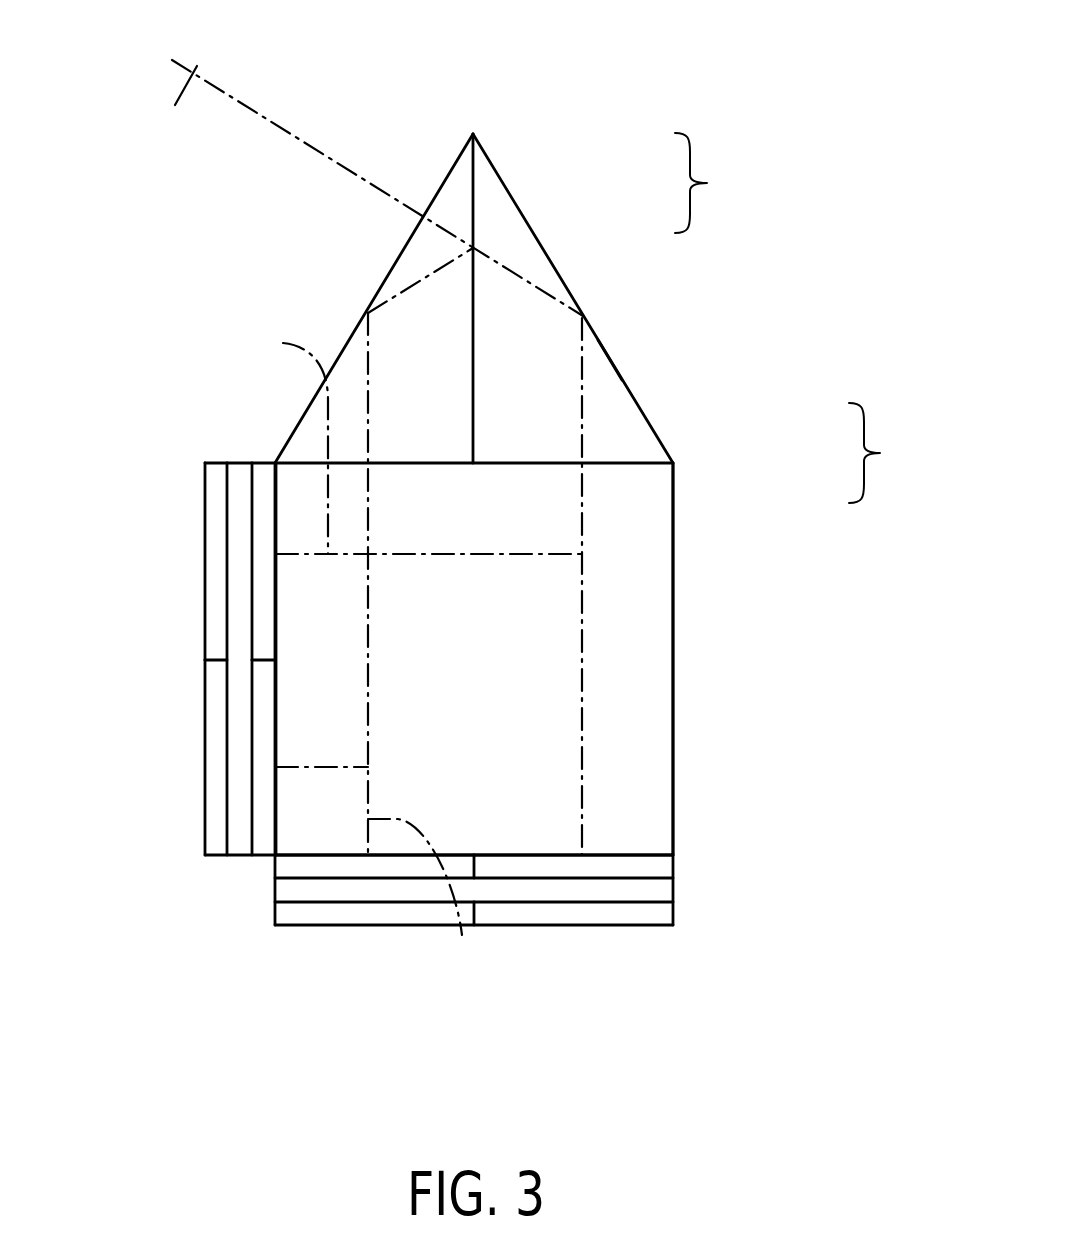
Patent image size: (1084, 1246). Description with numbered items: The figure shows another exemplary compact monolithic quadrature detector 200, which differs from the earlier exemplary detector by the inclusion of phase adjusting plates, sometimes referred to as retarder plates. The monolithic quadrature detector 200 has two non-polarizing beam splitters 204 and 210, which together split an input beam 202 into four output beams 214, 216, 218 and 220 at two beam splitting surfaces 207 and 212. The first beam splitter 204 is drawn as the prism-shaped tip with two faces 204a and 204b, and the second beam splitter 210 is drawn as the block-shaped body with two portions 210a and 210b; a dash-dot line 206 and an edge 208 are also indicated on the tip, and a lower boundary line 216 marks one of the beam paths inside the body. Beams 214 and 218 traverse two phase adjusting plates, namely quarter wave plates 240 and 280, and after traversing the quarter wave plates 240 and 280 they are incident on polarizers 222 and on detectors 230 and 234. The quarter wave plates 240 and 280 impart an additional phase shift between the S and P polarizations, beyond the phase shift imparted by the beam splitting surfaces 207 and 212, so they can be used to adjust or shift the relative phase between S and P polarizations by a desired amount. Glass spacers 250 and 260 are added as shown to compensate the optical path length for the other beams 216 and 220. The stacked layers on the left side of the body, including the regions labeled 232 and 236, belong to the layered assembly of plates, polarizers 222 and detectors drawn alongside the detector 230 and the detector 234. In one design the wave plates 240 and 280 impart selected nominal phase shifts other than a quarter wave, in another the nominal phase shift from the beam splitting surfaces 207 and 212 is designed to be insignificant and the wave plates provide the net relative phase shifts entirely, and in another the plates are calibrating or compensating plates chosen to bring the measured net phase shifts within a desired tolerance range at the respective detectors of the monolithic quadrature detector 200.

The monolithic quadrature detector 200 is at (597, 78).
The input beam 202 is at (170, 110).
The non-polarizing beam splitter 204 is at (725, 183).
The first cutting edge 204a is at (453, 207).
The second cutting edge 204b is at (498, 212).
The angle reference line 206 is at (410, 287).
The beam splitting surface 207 is at (477, 303).
The side edge 208 is at (617, 356).
The non-polarizing beam splitter 210 is at (899, 453).
The first body portion 210a is at (495, 510).
The second body portion 210b is at (650, 548).
The beam splitting surface 212 is at (435, 695).
The output beam 214 is at (280, 343).
The output beam 216 is at (303, 767).
The output beam 218 is at (583, 657).
The output beam 220 is at (462, 935).
The polarizers 222 is at (285, 893).
The detector 230 is at (217, 550).
The outer layer lower portion 232 is at (217, 733).
The detector 234 is at (630, 915).
The bottom plate 236 is at (317, 920).
The quarter wave plate 240 is at (262, 508).
The glass spacer 250 is at (265, 692).
The glass spacer 260 is at (360, 870).
The quarter wave plate 280 is at (675, 865).